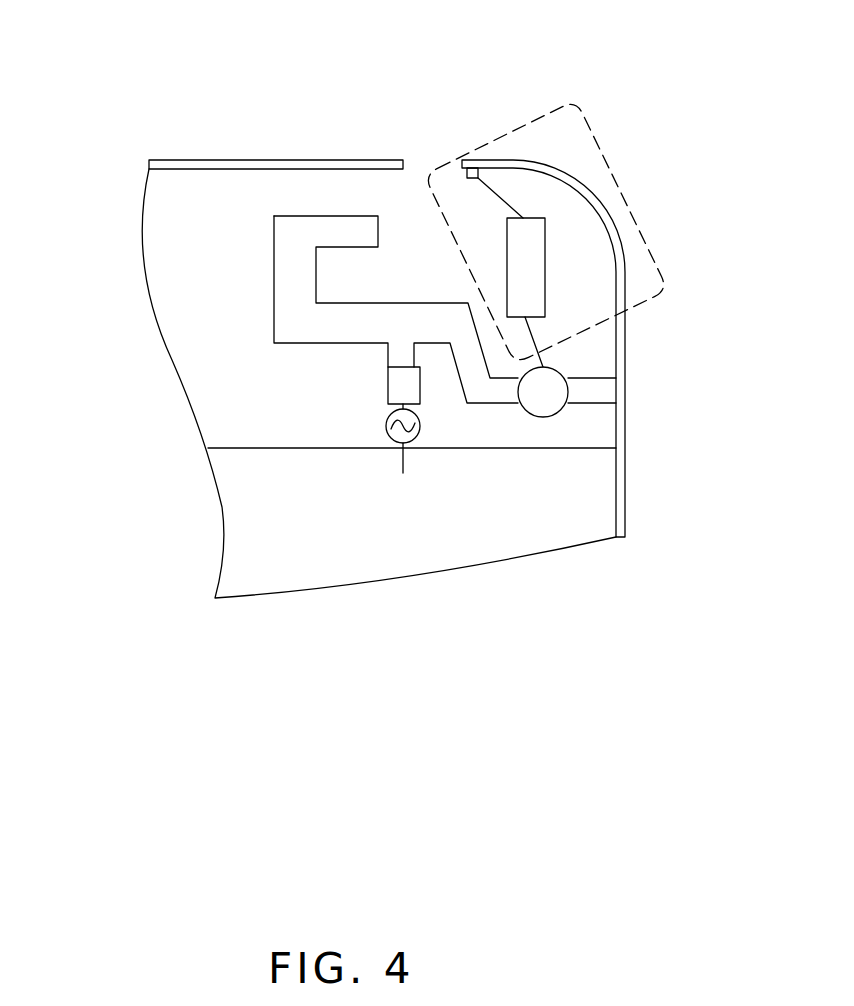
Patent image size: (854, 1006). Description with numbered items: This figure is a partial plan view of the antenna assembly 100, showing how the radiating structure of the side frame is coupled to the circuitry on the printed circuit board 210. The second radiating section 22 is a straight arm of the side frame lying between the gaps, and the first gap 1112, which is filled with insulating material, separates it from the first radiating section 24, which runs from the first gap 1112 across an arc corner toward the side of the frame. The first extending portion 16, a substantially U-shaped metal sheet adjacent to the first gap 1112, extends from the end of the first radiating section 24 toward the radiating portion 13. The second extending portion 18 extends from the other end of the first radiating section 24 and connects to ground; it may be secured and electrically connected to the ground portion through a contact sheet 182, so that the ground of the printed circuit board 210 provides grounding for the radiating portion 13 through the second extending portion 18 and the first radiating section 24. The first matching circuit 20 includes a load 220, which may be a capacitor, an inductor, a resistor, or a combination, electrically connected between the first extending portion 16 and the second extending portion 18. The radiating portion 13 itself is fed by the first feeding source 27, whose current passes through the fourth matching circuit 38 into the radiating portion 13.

The antenna assembly 100 is at (352, 68).
The second radiating section 22 is at (294, 163).
The printed circuit board 210 is at (267, 508).
The first matching circuit 20 is at (610, 167).
The first gap 1112 is at (432, 150).
The first extending portion 16 is at (472, 173).
The load 220 is at (545, 257).
The radiating portion 13 is at (290, 270).
The first radiating section 24 is at (618, 318).
The second extending portion 18 is at (600, 388).
The contact sheet 182 is at (550, 397).
The fourth matching circuit 38 is at (398, 385).
The first feeding source 27 is at (417, 437).